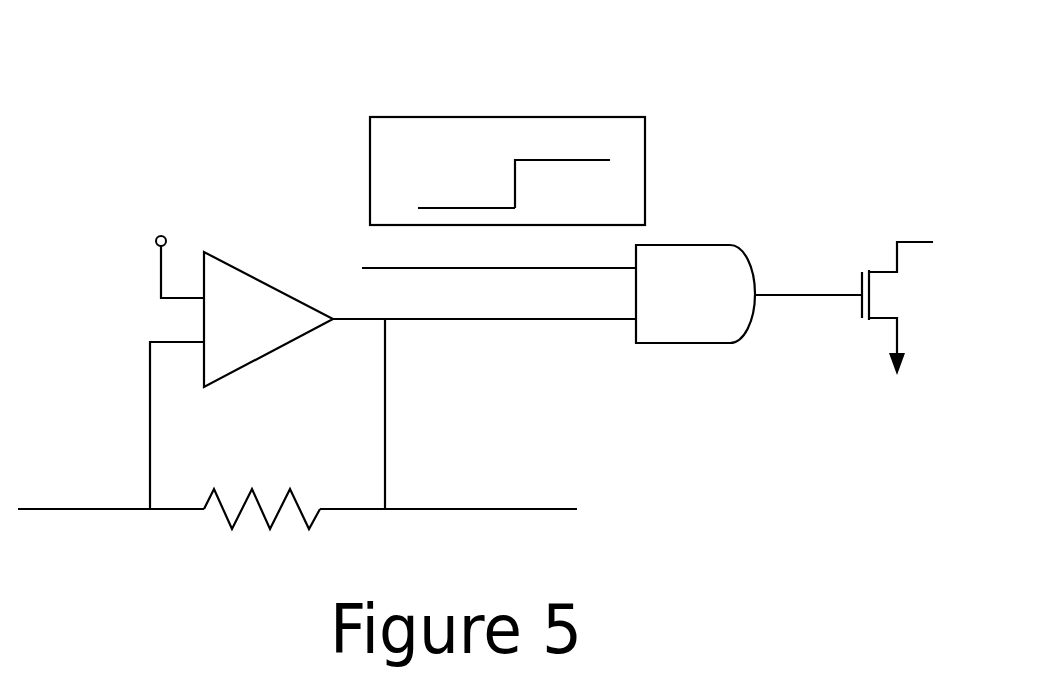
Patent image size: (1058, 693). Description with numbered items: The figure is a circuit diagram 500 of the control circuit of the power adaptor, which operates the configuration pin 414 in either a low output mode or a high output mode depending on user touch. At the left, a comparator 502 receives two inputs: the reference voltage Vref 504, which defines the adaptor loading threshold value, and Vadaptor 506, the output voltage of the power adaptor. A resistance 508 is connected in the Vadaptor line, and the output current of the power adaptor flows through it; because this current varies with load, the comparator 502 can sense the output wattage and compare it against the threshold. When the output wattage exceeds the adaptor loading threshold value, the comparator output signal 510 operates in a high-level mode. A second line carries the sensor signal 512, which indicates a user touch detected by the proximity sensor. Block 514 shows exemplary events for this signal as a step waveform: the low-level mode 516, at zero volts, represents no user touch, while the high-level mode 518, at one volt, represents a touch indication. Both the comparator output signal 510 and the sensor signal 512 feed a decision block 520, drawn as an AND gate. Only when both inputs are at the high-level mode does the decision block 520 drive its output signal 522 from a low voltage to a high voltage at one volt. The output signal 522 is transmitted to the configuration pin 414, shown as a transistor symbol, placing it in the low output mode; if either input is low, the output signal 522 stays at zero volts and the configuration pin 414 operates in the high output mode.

The circuit diagram 500 is at (109, 54).
The comparator 502 is at (268, 319).
The Vref 504 is at (157, 237).
The Vadaptor 506 is at (92, 509).
The resistance 508 is at (252, 490).
The comparator output signal 510 is at (485, 319).
The sensor signal 512 is at (505, 268).
The block 514 is at (507, 156).
The low-level mode 516 is at (440, 208).
The high-level mode 518 is at (585, 160).
The decision block 520 is at (695, 294).
The output signal 522 is at (785, 295).
The configuration pin 414 is at (917, 242).